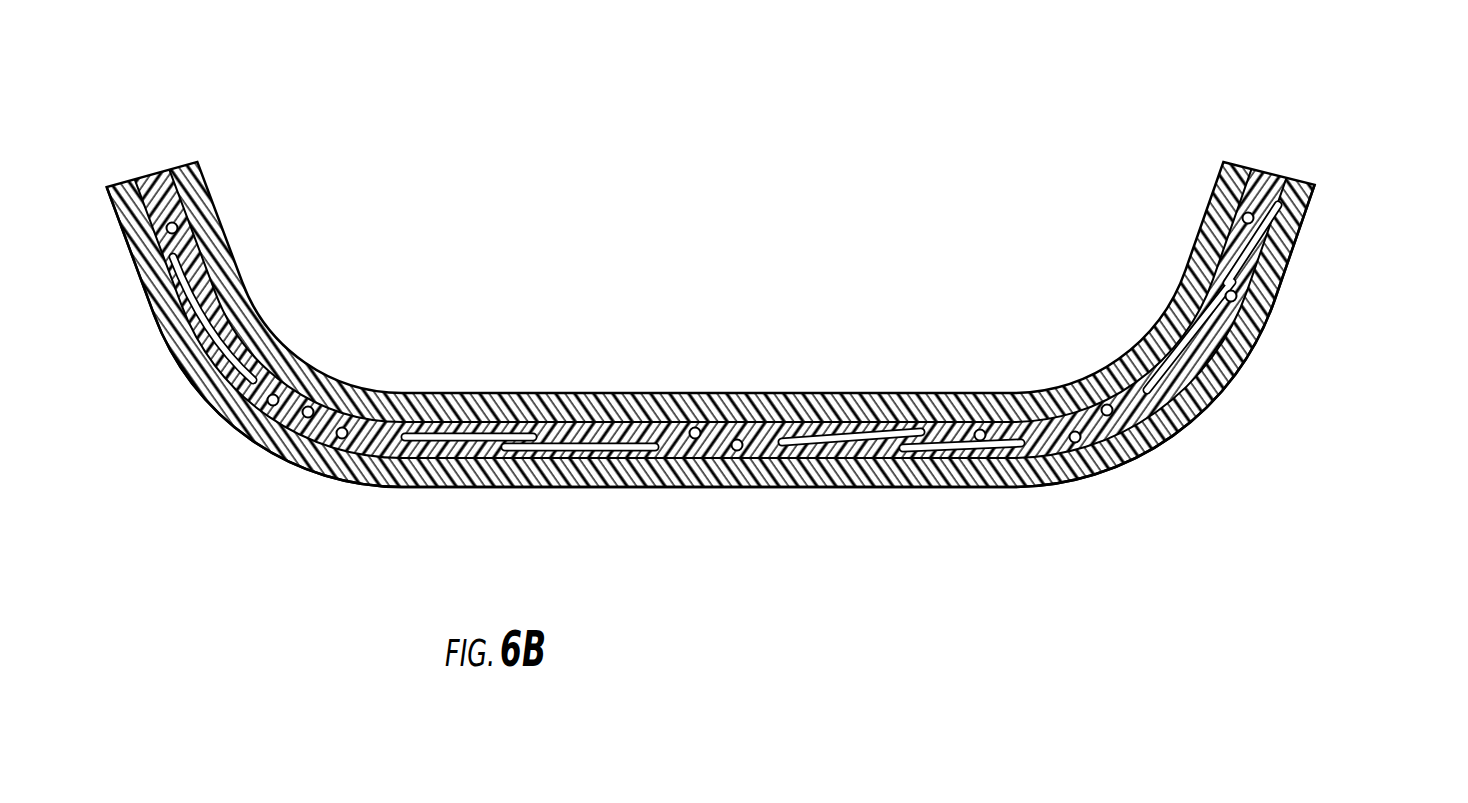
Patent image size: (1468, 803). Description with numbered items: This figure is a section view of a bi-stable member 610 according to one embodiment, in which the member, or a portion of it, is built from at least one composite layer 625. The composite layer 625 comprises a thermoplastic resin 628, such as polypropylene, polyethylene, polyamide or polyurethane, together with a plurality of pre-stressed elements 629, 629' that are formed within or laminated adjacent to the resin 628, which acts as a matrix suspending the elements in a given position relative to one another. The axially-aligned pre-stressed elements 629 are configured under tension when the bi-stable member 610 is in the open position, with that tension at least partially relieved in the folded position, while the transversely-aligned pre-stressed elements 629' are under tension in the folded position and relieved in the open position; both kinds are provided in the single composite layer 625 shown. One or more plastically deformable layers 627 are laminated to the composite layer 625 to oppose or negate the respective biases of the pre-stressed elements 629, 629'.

The bi-stable member 610 is at (773, 319).
The composite layer 625 is at (1258, 268).
The plastically deformable layer 627 is at (1272, 311).
The thermoplastic resin 628 is at (1156, 432).
The axially-aligned pre-stressed elements 629 is at (710, 409).
The transversely-aligned pre-stressed elements 629' is at (725, 326).